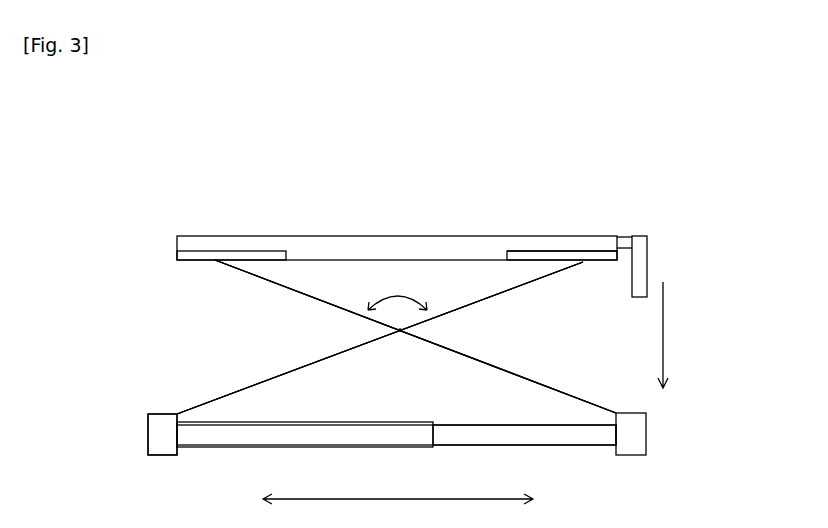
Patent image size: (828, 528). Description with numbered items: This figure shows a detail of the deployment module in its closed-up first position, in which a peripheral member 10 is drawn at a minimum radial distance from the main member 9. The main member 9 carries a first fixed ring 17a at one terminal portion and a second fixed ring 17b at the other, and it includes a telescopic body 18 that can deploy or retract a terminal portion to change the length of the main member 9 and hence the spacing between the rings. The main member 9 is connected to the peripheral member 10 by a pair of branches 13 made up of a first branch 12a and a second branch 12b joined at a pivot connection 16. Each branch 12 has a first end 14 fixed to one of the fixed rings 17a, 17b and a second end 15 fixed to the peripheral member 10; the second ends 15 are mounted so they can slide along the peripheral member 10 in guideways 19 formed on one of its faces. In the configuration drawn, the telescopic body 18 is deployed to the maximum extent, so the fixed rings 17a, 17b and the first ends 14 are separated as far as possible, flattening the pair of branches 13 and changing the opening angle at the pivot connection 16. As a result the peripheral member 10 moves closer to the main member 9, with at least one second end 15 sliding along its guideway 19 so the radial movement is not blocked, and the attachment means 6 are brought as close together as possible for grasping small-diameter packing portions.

The attachment means 6 is at (639, 240).
The main member 9 is at (221, 447).
The peripheral member 10 is at (389, 236).
The branch 12 is at (244, 272).
The first branch 12a is at (415, 336).
The second branch 12b is at (380, 338).
The pair of branches 13 is at (469, 333).
The first end 14 is at (170, 413).
The second end 15 is at (585, 262).
The pivot connection 16 is at (400, 332).
The first fixed ring 17a is at (148, 432).
The second fixed ring 17b is at (637, 429).
The telescopic body 18 is at (336, 447).
The guideway 19 is at (232, 255).